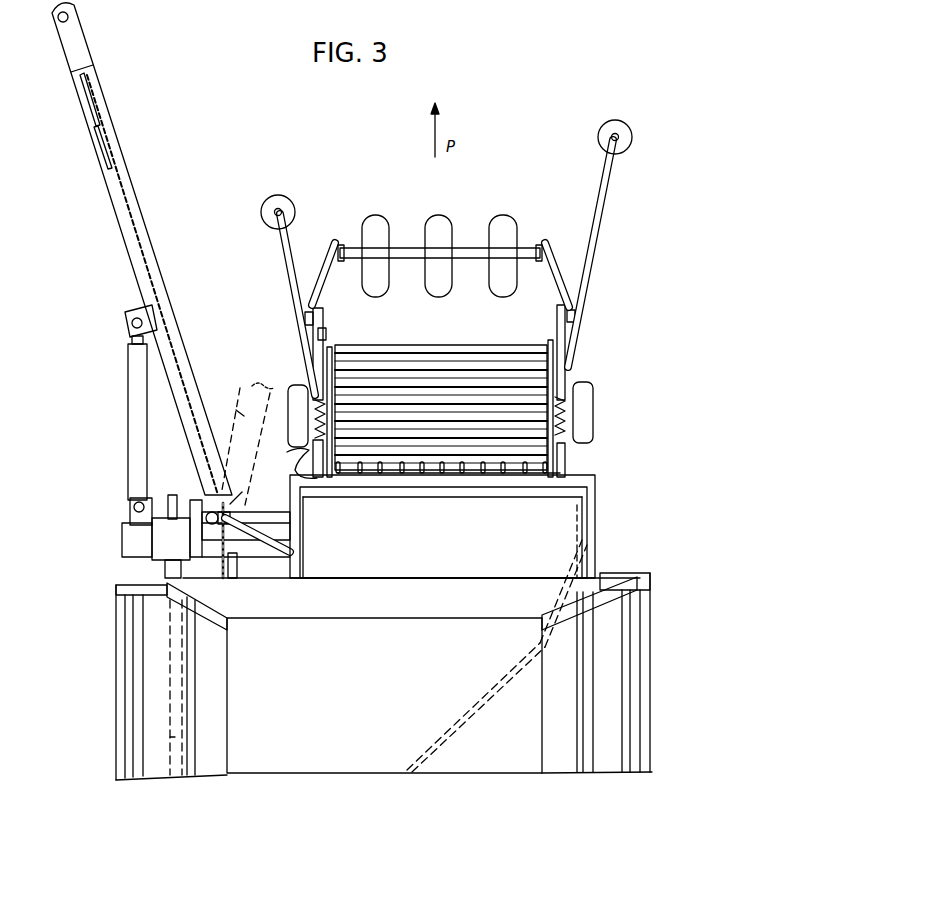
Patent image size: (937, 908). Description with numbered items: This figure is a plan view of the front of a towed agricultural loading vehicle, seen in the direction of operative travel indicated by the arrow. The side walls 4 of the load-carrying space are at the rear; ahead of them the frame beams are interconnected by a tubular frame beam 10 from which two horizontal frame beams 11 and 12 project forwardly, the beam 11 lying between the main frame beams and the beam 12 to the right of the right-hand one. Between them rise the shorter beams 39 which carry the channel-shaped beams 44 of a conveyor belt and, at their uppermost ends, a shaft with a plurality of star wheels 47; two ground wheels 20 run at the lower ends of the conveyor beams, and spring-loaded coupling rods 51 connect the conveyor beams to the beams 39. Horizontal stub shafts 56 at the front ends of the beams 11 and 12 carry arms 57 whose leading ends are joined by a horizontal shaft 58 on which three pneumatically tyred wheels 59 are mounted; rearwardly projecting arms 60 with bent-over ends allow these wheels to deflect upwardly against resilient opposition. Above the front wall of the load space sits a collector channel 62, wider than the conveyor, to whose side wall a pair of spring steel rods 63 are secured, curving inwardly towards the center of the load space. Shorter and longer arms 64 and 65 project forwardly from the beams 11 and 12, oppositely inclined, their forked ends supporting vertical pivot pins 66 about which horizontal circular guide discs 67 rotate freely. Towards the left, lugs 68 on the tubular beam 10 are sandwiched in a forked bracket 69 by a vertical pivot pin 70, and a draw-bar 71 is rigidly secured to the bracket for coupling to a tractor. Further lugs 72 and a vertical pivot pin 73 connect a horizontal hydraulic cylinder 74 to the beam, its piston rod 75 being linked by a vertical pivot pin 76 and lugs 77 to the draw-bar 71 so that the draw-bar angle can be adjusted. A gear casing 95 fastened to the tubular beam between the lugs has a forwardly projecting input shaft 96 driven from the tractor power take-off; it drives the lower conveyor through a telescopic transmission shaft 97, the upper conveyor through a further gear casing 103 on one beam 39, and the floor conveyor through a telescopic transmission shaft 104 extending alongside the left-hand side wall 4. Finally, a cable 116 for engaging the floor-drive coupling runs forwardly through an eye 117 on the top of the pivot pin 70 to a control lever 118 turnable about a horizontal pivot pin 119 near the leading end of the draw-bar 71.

The side walls 4 is at (652, 604).
The tubular frame beam 10 is at (122, 545).
The horizontal frame beam 11 is at (326, 313).
The horizontal frame beam 12 is at (556, 308).
The ground wheels 20 is at (301, 386).
The beams 39 is at (334, 352).
The beams of channel-shaped cross-section 44 is at (420, 350).
The star wheels 47 is at (453, 474).
The coupling rods 51 is at (570, 461).
The horizontal stub shafts 56 is at (305, 320).
The arms 57 is at (330, 258).
The horizontal shaft 58 is at (472, 260).
The pneumatically tyred wheels 59 is at (500, 218).
The arms 60 is at (314, 340).
The collector channel 62 is at (592, 540).
The spring steel rods 63 is at (498, 688).
The shorter arm 64 is at (293, 272).
The longer arm 65 is at (594, 258).
The vertical pivot pins 66 is at (280, 226).
The horizontal circular guide discs 67 is at (290, 200).
The horizontal lugs 68 is at (258, 521).
The forked bracket 69 is at (238, 490).
The vertical pivot pin 70 is at (242, 508).
The draw-bar 71 is at (138, 214).
The lugs 72 is at (130, 513).
The vertical pivot pin 73 is at (132, 505).
The hydraulic cylinder 74 is at (128, 442).
The piston rod 75 is at (131, 341).
The vertical pivot pin 76 is at (131, 323).
The lugs 77 is at (130, 308).
The gear casing 95 is at (158, 563).
The input shaft 96 is at (176, 497).
The telescopic transmission shaft 97 is at (268, 558).
The gear casing 103 is at (281, 460).
The telescopic transmission shaft 104 is at (170, 737).
The cable 116 is at (222, 571).
The eye 117 is at (256, 510).
The control lever 118 is at (97, 128).
The horizontal pivot pin 119 is at (82, 97).